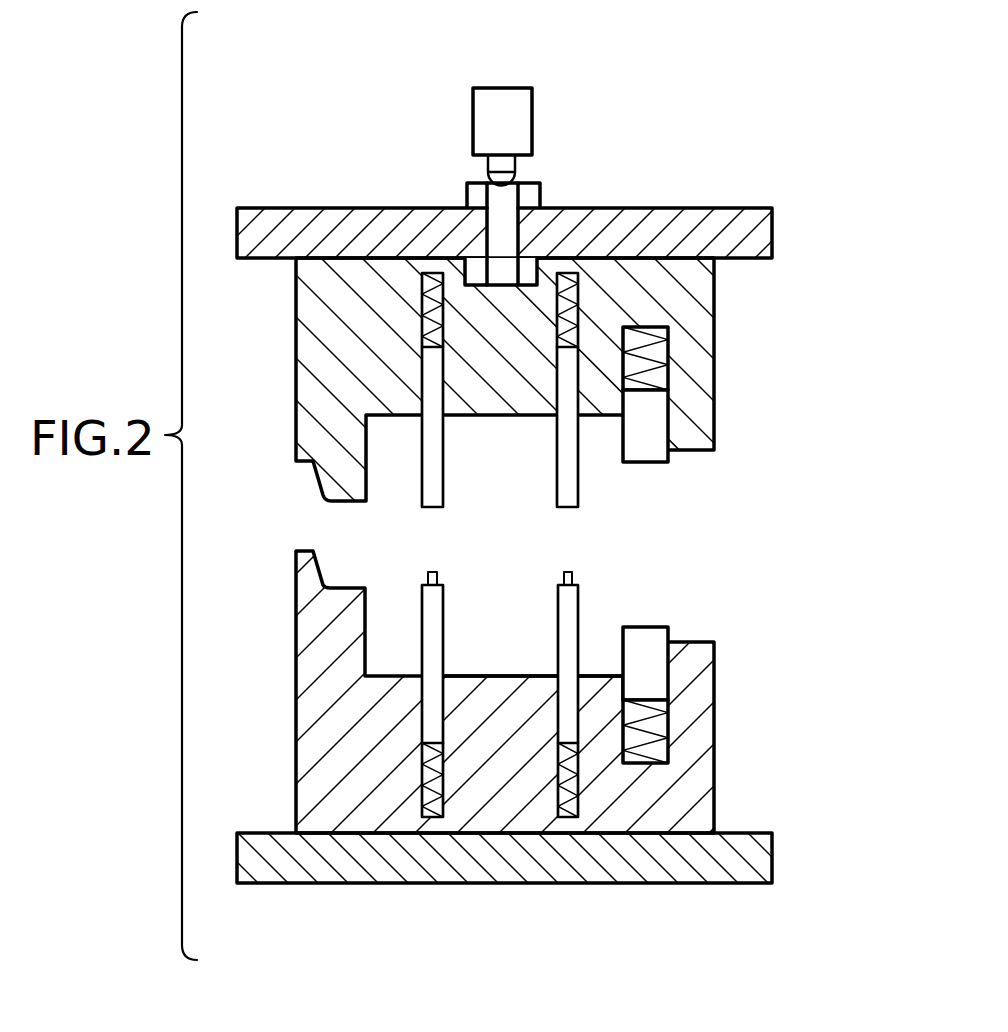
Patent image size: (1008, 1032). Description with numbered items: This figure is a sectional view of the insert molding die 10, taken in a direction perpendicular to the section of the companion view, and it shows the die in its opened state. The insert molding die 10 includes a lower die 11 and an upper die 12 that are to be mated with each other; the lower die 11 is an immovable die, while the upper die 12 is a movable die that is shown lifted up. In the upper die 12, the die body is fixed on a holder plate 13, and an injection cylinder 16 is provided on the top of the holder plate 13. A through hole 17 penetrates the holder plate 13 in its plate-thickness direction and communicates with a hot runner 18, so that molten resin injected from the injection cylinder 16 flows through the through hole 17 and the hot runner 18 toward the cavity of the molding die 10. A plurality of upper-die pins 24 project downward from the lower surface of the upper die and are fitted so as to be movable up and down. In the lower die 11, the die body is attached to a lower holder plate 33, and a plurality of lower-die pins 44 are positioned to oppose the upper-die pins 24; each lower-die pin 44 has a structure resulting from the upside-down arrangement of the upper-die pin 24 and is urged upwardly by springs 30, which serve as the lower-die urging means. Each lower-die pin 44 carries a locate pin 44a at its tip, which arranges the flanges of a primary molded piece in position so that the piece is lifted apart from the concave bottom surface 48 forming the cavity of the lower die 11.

The insert molding die 10 is at (822, 251).
The lower die 11 is at (729, 690).
The upper die 12 is at (727, 333).
The holder plate 13 is at (725, 217).
The injection cylinder 16 is at (503, 100).
The through hole 17 is at (512, 226).
The hot runner 18 is at (508, 272).
The upper-die pin 24 is at (568, 489).
The spring 30 is at (577, 307).
The lower holder plate 33 is at (667, 867).
The lower-die pin 44 is at (567, 598).
The locate pin 44a is at (568, 573).
The concave bottom surface 48 is at (502, 676).